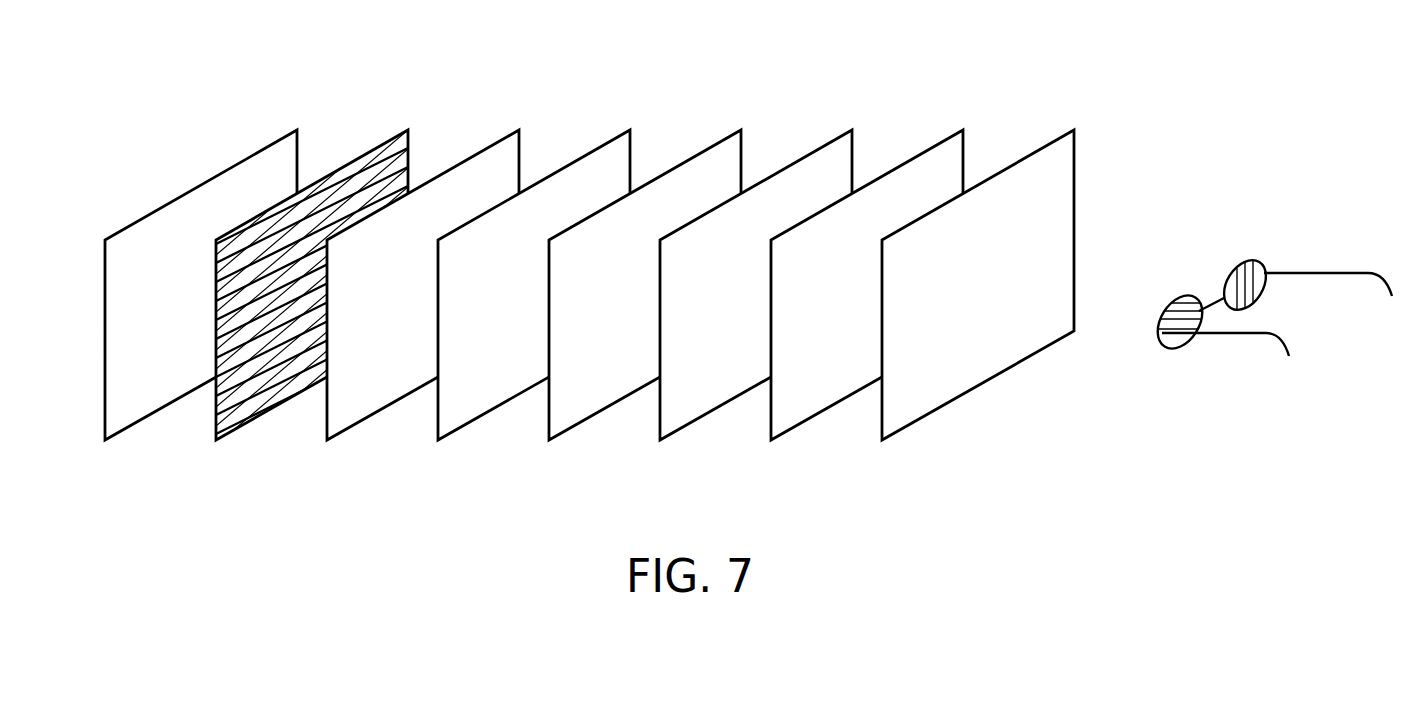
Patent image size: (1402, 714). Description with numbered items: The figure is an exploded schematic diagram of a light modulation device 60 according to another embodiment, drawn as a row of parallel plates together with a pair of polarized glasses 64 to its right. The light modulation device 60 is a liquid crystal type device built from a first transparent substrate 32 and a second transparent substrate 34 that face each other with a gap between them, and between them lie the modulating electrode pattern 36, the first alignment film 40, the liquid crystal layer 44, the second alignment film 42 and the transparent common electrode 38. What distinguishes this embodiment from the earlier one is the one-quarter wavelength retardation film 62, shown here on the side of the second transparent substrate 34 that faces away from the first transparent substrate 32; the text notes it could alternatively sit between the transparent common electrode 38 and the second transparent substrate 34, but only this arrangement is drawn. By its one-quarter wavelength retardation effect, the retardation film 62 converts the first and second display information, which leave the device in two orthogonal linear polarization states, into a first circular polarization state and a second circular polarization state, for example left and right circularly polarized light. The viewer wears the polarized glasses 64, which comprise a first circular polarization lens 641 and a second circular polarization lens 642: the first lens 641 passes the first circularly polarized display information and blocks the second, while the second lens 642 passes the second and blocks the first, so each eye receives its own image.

The light modulation device 60 is at (1102, 60).
The first transparent substrate 32 is at (252, 154).
The modulating electrode pattern 36 is at (364, 155).
The first alignment film 40 is at (494, 144).
The liquid crystal layer 44 is at (605, 144).
The second alignment film 42 is at (716, 144).
The transparent common electrode 38 is at (828, 145).
The second transparent substrate 34 is at (935, 146).
The one-quarter wavelength retardation film 62 is at (1045, 147).
The polarized glasses 64 is at (1275, 205).
The first circular polarization lens 641 is at (1188, 298).
The second circular polarization lens 642 is at (1247, 262).